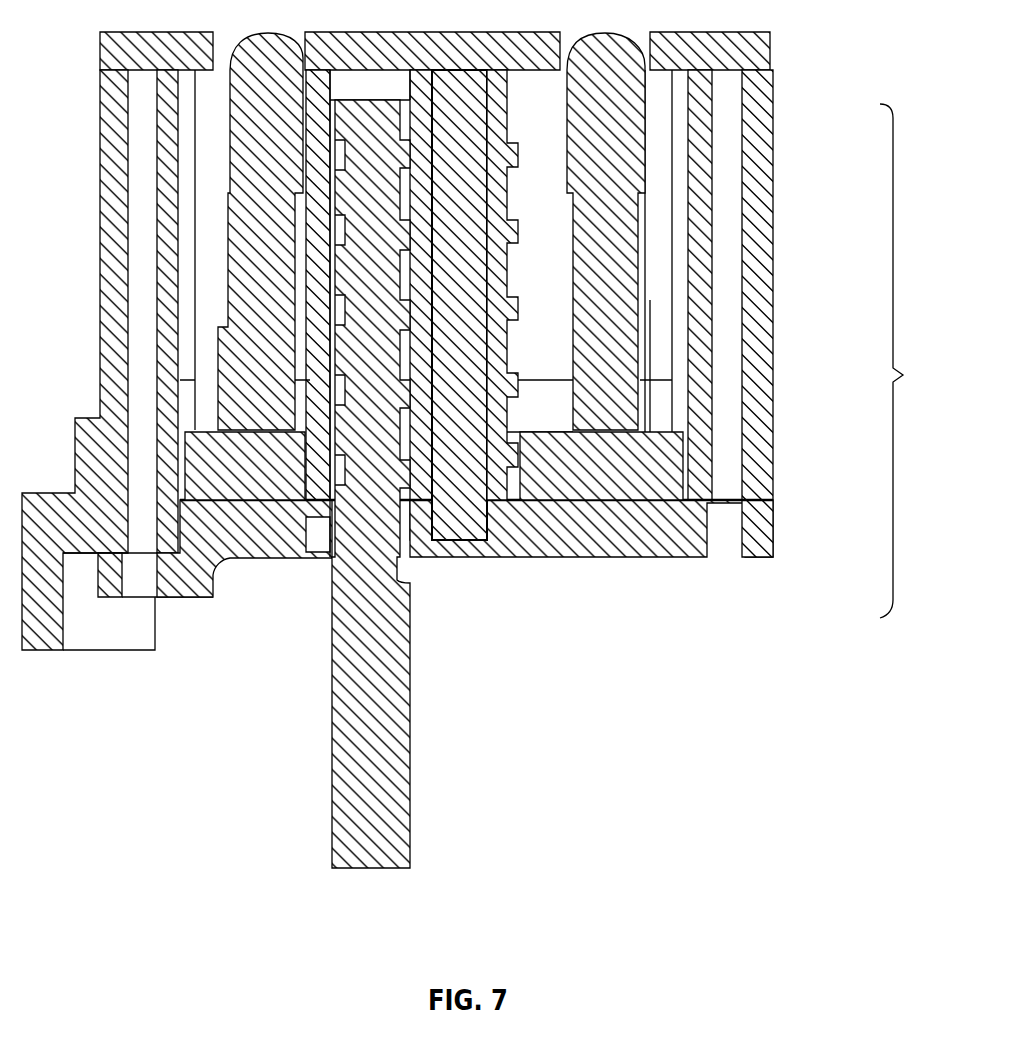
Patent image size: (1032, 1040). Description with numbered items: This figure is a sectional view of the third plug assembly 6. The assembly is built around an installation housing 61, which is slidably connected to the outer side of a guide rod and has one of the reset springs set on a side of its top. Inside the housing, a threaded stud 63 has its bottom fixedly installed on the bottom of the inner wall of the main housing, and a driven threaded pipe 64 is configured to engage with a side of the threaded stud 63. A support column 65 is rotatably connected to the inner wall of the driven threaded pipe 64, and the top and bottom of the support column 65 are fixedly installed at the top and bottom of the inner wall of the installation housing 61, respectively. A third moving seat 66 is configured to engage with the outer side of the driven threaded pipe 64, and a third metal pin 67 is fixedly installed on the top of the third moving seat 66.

The third plug assembly 6 is at (904, 361).
The installation housing 61 is at (697, 187).
The threaded stud 63 is at (387, 617).
The driven threaded pipe 64 is at (507, 340).
The support column 65 is at (455, 142).
The third moving seat 66 is at (600, 470).
The third metal pin 67 is at (627, 281).